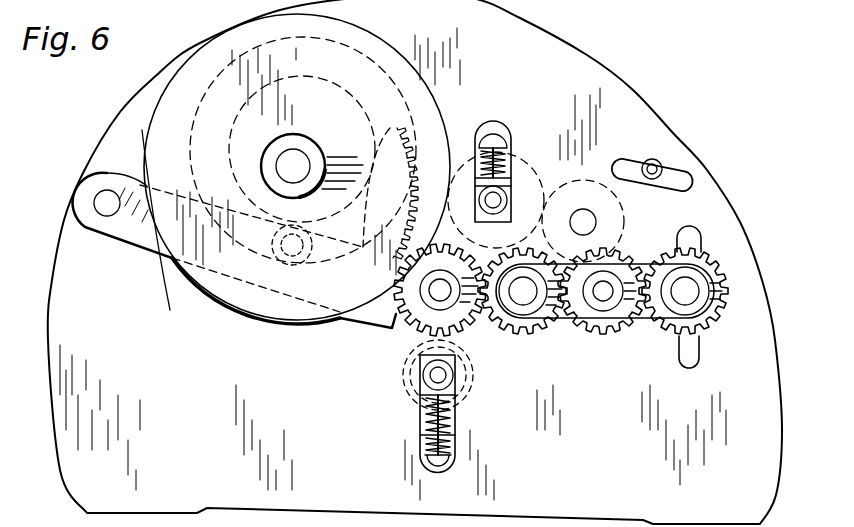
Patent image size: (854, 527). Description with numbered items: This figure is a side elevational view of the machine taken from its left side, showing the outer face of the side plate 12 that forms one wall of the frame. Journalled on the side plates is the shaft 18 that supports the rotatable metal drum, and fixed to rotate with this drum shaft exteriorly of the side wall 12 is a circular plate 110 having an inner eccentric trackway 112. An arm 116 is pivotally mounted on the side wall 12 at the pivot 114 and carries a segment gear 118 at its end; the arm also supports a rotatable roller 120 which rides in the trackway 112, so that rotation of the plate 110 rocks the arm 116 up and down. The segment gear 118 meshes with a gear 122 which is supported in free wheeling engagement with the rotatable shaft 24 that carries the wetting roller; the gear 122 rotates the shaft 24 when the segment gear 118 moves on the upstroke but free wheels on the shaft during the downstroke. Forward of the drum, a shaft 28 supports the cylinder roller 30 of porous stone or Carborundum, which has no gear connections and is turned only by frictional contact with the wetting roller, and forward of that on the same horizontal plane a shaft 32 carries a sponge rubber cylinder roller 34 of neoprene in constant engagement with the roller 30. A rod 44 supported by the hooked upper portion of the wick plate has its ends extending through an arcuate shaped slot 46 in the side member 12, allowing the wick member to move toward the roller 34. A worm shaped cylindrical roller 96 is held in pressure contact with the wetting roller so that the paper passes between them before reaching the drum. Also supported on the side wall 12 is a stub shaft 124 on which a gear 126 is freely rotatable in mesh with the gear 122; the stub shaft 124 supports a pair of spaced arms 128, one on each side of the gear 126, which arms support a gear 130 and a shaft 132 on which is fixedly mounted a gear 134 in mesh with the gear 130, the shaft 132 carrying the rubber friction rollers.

The side plate 12 is at (636, 96).
The shaft 18 is at (293, 166).
The rotatable shaft 24 is at (441, 292).
The shaft 28 is at (498, 200).
The cylinder roller 30 is at (528, 152).
The shaft 32 is at (592, 204).
The sponge rubber cylinder roller 34 is at (595, 160).
The rod 44 is at (653, 162).
The arcuate shaped slot 46 is at (678, 177).
The worm shaped cylindrical roller 96 is at (475, 397).
The circular plate 110 is at (363, 42).
The eccentric trackway 112 is at (292, 45).
The pivot 114 is at (105, 203).
The arm 116 is at (234, 233).
The segment gear 118 is at (440, 134).
The rotatable roller 120 is at (310, 265).
The gear 122 is at (420, 330).
The stub shaft 124 is at (497, 126).
The gear 126 is at (524, 320).
The spaced arm 128 is at (651, 266).
The gear 130 is at (623, 320).
The shaft 132 is at (690, 293).
The gear 134 is at (712, 325).